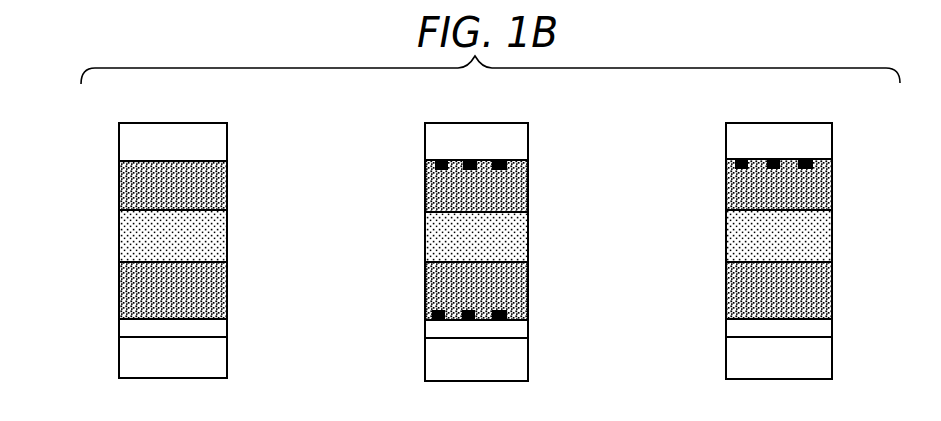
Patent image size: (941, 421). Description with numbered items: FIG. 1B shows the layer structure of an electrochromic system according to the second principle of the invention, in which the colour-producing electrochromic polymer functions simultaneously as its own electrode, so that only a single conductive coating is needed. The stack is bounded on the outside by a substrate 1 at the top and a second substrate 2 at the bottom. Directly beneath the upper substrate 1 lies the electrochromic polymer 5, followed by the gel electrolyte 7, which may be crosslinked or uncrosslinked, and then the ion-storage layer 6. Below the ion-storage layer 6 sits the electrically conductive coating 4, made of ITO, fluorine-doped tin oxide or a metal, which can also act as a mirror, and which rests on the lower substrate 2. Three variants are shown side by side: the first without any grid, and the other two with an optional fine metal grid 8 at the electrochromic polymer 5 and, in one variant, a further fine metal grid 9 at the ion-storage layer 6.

The substrate 1 is at (223, 138).
The substrate 2 is at (213, 352).
The electrically conductive coating 4 is at (216, 327).
The electrochromic polymer 5 is at (215, 176).
The ion-storage layer 6 is at (213, 282).
The gel electrolyte 7 is at (213, 228).
The fine metal grid 8 is at (432, 170).
The fine metal grid 9 is at (428, 305).